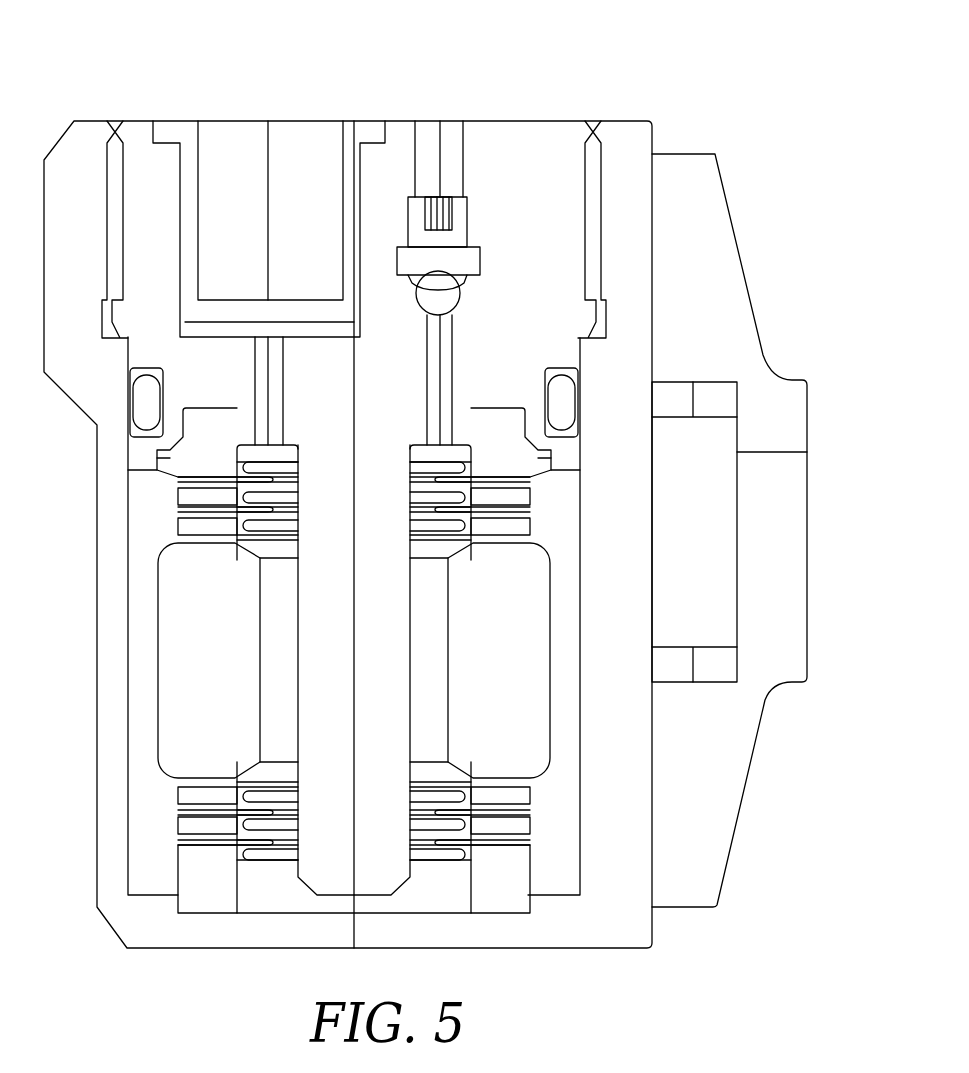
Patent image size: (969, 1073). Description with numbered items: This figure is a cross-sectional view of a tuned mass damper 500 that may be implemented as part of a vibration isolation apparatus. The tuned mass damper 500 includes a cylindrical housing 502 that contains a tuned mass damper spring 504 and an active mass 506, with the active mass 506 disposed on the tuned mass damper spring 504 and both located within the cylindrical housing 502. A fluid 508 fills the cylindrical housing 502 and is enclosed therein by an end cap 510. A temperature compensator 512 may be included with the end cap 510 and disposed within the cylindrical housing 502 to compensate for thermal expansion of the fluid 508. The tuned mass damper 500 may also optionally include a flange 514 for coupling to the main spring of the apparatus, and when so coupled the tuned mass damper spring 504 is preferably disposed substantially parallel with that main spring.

The tuned mass damper 500 is at (757, 68).
The cylindrical housing 502 is at (654, 600).
The tuned mass damper spring 504 is at (528, 527).
The active mass 506 is at (549, 601).
The fluid 508 is at (146, 513).
The end cap 510 is at (521, 133).
The temperature compensator 512 is at (187, 283).
The flange 514 is at (712, 185).